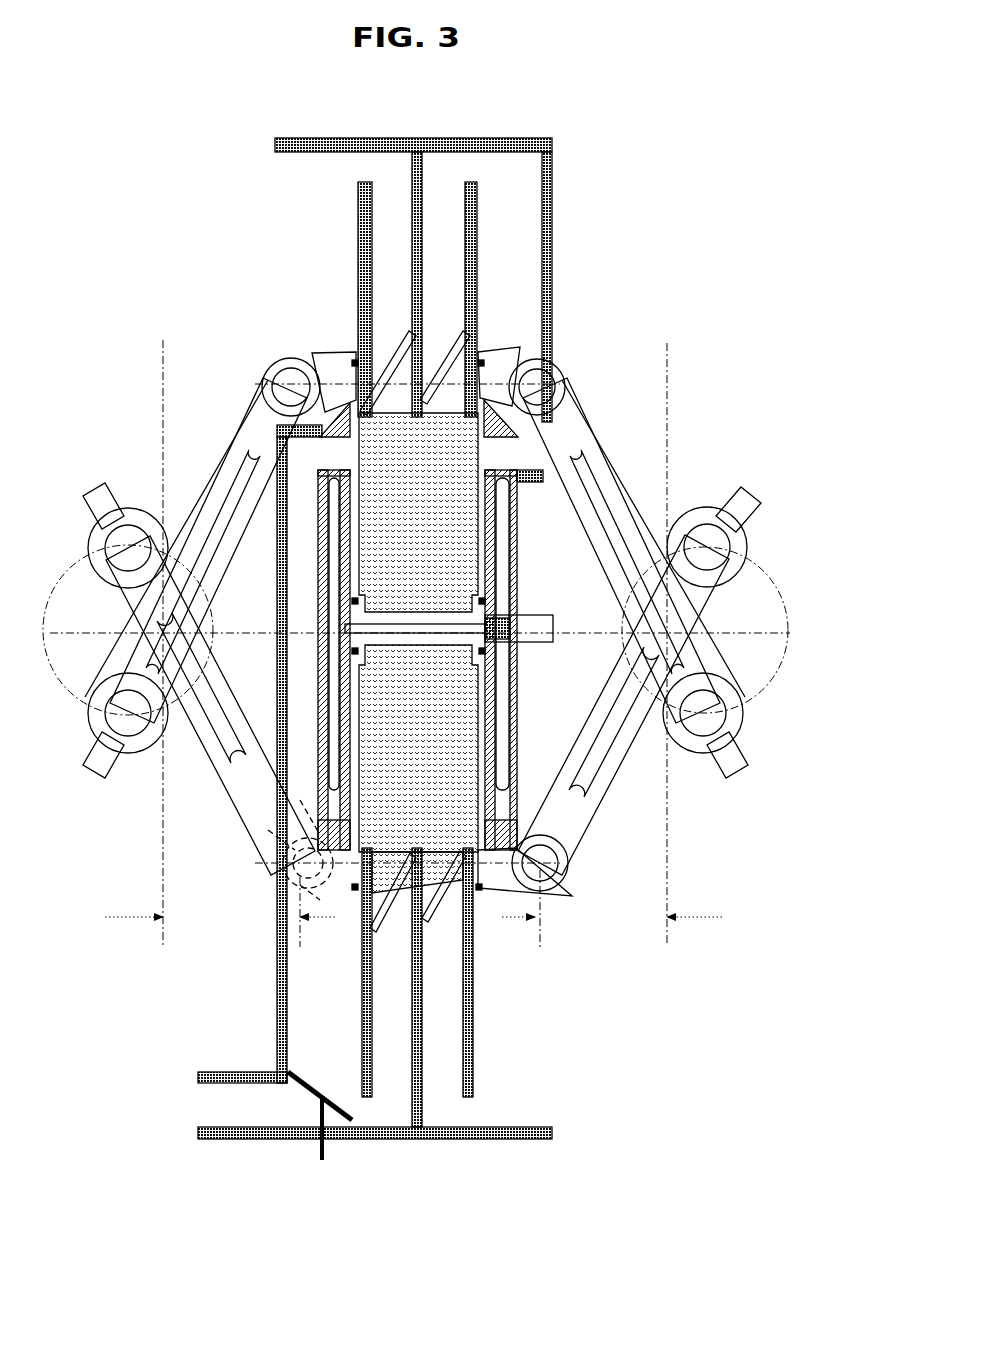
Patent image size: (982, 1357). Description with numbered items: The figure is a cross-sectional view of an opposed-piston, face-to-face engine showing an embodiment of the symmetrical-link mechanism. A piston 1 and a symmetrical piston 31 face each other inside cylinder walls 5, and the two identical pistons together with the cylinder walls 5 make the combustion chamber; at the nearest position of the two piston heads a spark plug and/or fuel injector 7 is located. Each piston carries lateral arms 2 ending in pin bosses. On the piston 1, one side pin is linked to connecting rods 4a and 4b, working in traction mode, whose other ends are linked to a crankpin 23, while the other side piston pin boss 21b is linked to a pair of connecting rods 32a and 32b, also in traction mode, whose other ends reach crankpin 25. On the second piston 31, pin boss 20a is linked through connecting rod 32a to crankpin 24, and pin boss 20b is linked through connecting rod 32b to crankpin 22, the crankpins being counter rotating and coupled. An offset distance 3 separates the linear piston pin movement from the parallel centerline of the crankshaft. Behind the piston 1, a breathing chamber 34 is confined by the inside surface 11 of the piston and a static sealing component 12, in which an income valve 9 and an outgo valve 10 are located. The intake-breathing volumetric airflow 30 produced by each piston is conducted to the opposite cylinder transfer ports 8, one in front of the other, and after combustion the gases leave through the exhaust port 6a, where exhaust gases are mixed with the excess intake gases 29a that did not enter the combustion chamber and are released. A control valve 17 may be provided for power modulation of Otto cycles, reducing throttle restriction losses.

The piston 1 is at (722, 703).
The lateral arms 2 is at (290, 885).
The offset distance 3 is at (422, 922).
The connecting rod 4a is at (98, 560).
The connecting rod 4b is at (745, 548).
The cylinder walls 5 is at (515, 820).
The exhaust port 6a is at (580, 866).
The spark plug and/or fuel injector 7 is at (533, 615).
The transfer ports 8 is at (255, 442).
The income valve 9 is at (510, 375).
The outgo valve 10 is at (550, 352).
The inside surface 11 is at (352, 368).
The static sealing component 12 is at (470, 213).
The control valve 17 is at (318, 1090).
The pin boss 20a is at (282, 362).
The pin boss 20b is at (550, 385).
The piston pin boss 21b is at (565, 900).
The crankpin 22 is at (720, 760).
The crankpin 23 is at (130, 510).
The crankpin 24 is at (104, 752).
The crankpin 25 is at (728, 505).
The stopper plate 29a is at (234, 1105).
The intake-breathing volumetric airflow 30 is at (360, 162).
The symmetrical piston 31 is at (100, 702).
The connecting rod 32a is at (136, 672).
The connecting rod 32b is at (740, 652).
The breathing chamber 34 is at (452, 567).